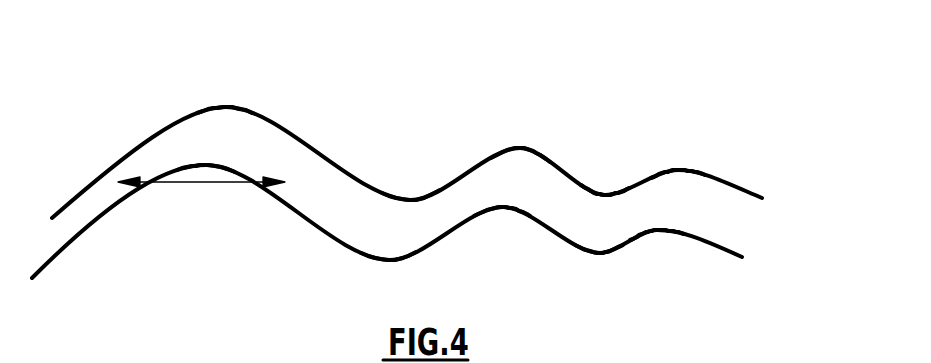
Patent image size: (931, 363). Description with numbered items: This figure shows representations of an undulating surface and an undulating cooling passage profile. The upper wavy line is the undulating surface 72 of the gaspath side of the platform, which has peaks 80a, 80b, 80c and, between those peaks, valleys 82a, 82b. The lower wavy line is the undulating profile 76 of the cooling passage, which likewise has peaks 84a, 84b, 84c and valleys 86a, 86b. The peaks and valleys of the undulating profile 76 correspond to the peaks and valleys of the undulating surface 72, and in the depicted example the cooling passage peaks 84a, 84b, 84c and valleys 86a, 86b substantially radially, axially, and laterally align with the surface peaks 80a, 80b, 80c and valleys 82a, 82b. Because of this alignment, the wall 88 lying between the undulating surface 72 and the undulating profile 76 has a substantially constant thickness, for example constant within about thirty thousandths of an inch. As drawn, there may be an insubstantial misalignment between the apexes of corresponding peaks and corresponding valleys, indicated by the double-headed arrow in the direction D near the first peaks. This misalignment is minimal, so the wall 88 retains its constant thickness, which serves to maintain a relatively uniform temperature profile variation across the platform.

The undulating surface 72 is at (705, 173).
The undulating profile 76 is at (713, 244).
The peak 80a is at (225, 105).
The peak 80b is at (518, 148).
The peak 80c is at (677, 170).
The valley 82a is at (407, 200).
The valley 82b is at (605, 194).
The peak 84a is at (214, 168).
The peak 84b is at (499, 207).
The peak 84c is at (653, 226).
The valley 86a is at (386, 259).
The valley 86b is at (590, 253).
The wall 88 is at (327, 196).
The direction D is at (182, 183).